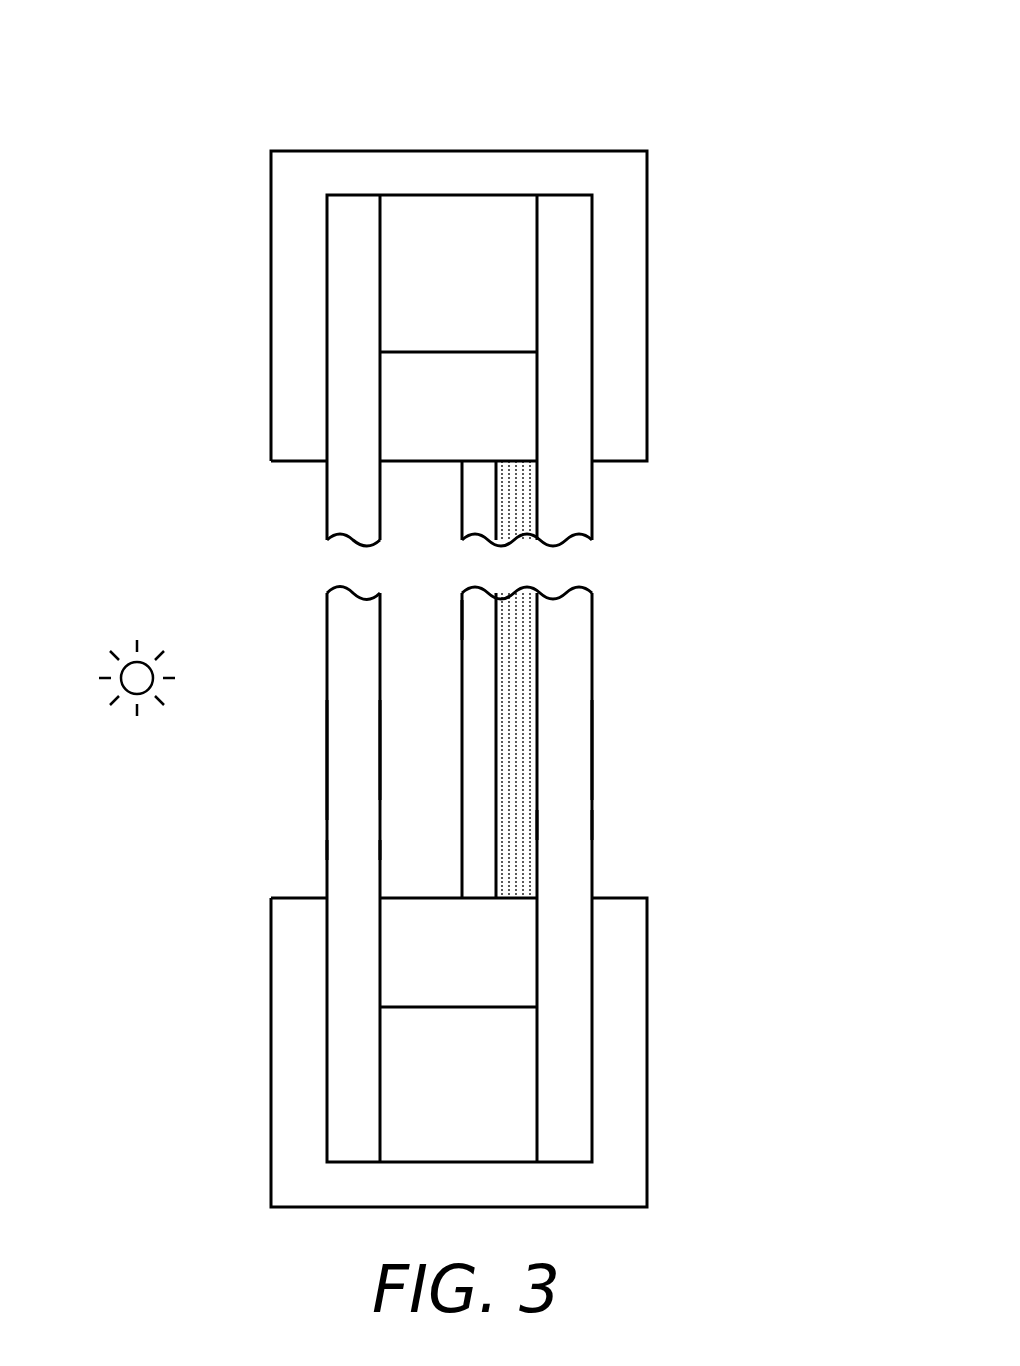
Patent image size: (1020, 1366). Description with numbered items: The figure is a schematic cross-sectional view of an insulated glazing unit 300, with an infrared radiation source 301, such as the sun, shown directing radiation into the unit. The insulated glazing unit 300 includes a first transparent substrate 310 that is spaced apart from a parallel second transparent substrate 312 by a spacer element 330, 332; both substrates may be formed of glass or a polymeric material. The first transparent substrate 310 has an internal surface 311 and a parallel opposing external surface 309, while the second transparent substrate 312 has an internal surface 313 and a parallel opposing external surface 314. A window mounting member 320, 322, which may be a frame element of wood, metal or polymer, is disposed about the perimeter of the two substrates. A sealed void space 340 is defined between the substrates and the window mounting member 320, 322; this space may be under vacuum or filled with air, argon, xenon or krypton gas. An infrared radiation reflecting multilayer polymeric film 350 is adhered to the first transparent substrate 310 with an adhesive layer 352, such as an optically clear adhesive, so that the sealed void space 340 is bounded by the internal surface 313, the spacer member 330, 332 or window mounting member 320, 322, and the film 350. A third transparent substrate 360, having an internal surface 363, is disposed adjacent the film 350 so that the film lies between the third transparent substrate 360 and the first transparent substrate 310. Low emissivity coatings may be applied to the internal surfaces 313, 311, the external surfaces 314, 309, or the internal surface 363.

The insulated glazing unit 300 is at (625, 65).
The infrared radiation source 301 is at (125, 660).
The external surface 309 is at (592, 750).
The first transparent substrate 310 is at (575, 828).
The internal surface 311 is at (540, 492).
The second transparent substrate 312 is at (343, 847).
The internal surface 313 is at (383, 613).
The external surface 314 is at (327, 760).
The window mounting member 320 is at (625, 1053).
The window mounting member 322 is at (625, 243).
The spacer element 330 is at (520, 952).
The spacer element 332 is at (515, 412).
The sealed void space 340 is at (452, 758).
The infrared radiation reflecting multilayer polymeric film 350 is at (508, 540).
The adhesive layer 352 is at (532, 648).
The third transparent substrate 360 is at (468, 662).
The internal surface 363 is at (462, 622).